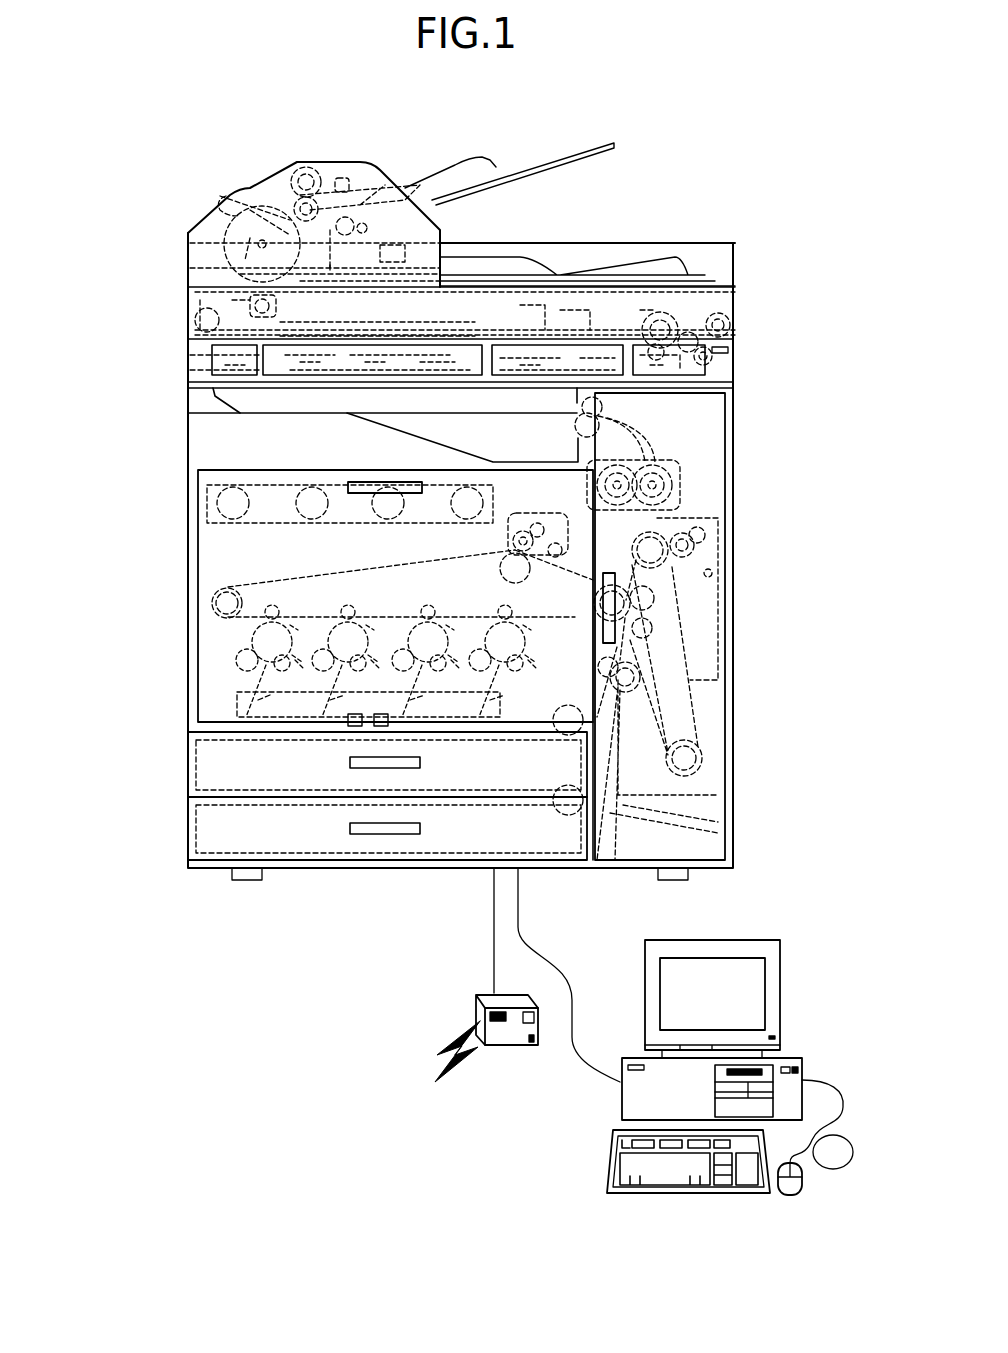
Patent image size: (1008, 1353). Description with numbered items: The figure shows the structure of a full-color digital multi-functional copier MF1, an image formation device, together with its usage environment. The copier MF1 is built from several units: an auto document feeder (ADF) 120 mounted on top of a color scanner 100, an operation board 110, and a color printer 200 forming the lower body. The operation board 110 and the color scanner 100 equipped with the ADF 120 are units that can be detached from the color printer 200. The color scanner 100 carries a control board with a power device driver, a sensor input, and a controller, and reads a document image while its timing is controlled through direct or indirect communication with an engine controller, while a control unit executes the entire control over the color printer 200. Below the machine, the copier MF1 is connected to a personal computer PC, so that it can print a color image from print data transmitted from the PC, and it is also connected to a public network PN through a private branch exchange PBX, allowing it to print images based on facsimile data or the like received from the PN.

The auto document feeder (ADF) 120 is at (186, 231).
The color scanner 100 is at (186, 305).
The operation board 110 is at (707, 360).
The color printer 200 is at (186, 519).
The full-color digital multi-functional copier MF1 is at (495, 150).
The personal computer PC is at (748, 937).
The private branch exchange PBX is at (507, 1047).
The public network PN is at (446, 1065).